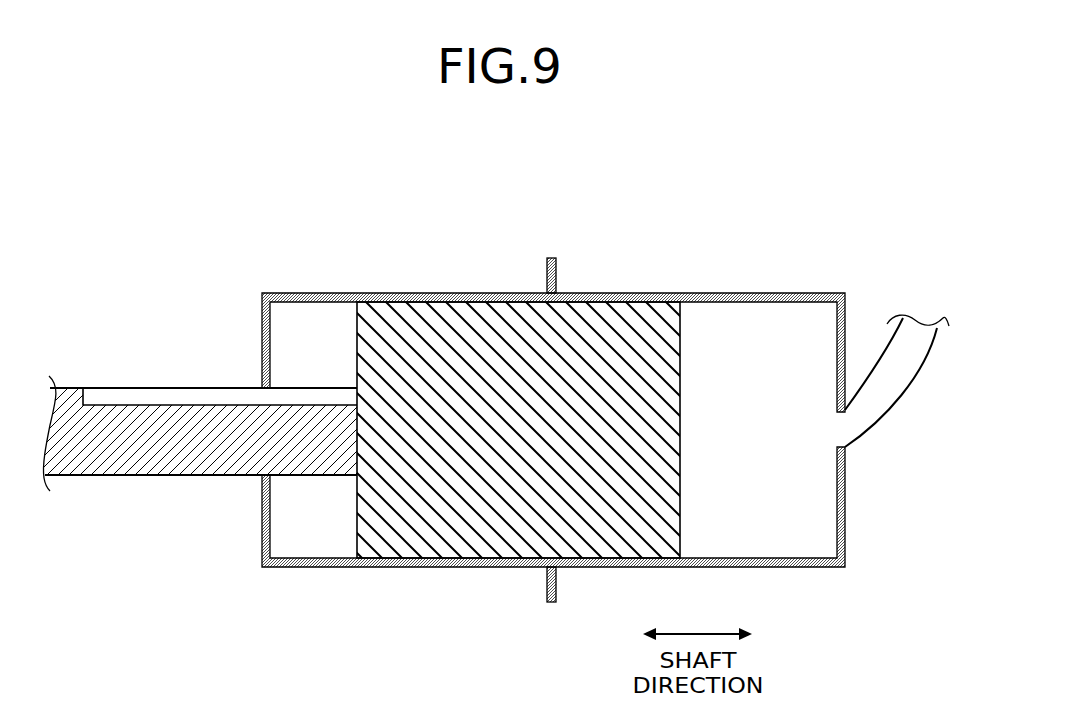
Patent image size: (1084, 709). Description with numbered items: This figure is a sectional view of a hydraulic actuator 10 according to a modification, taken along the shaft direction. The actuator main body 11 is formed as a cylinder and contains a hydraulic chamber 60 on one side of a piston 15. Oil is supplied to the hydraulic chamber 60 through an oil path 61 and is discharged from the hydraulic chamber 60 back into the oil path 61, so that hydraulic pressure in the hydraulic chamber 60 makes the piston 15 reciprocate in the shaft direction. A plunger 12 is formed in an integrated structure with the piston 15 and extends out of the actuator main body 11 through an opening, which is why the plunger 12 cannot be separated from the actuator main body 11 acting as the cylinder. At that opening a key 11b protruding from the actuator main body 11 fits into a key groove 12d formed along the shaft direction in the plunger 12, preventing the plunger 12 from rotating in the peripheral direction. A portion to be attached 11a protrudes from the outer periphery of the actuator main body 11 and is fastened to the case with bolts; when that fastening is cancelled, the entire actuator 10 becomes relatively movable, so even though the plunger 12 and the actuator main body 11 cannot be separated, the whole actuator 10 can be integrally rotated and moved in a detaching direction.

The actuator 10 is at (611, 219).
The actuator main body 11 is at (321, 293).
The portion to be attached 11a is at (557, 270).
The key 11b is at (260, 396).
The plunger 12 is at (200, 442).
The key groove 12d is at (137, 398).
The piston 15 is at (512, 520).
The hydraulic chamber 60 is at (772, 446).
The oil path 61 is at (910, 404).